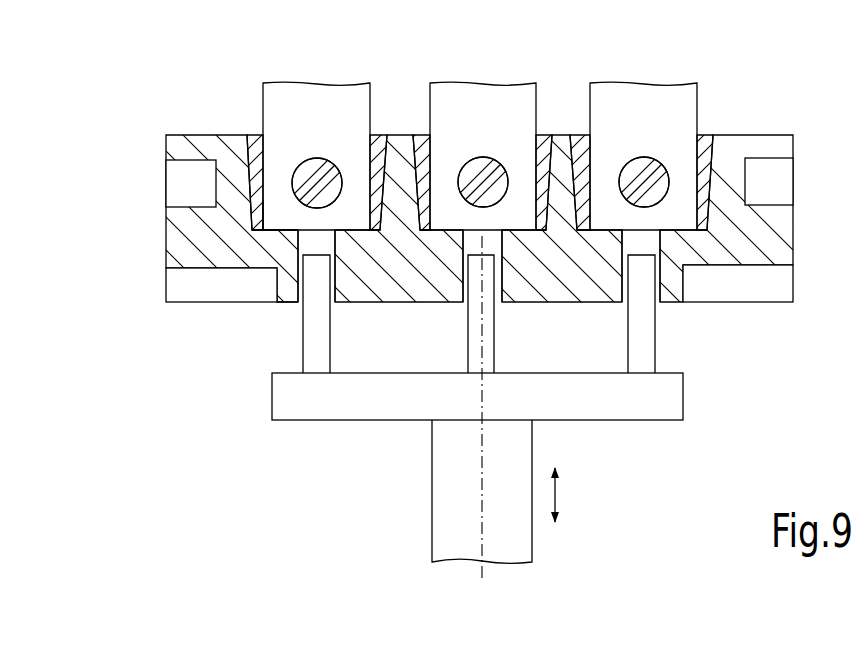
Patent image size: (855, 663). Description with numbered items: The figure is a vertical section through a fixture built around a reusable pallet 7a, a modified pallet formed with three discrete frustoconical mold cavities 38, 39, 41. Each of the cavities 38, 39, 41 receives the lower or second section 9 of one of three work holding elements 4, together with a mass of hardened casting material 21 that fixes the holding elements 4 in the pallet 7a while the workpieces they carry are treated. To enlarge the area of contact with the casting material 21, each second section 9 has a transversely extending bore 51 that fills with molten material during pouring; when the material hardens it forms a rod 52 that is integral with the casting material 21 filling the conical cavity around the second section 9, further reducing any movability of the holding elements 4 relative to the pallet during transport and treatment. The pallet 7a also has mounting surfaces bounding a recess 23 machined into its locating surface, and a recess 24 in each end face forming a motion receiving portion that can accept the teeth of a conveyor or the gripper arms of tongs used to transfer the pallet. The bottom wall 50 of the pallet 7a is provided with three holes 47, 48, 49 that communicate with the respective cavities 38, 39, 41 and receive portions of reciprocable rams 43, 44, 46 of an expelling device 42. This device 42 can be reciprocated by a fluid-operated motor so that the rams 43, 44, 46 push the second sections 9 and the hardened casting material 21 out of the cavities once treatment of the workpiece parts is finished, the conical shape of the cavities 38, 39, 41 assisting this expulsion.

The work holding element 4 is at (331, 112).
The reusable pallet 7a is at (162, 238).
The second section of work holding element 9 is at (280, 223).
The hardened casting material 21 is at (253, 150).
The recess 23 is at (183, 284).
The recess (tooth space) 24 is at (183, 180).
The frustoconical mold cavity 38 is at (375, 237).
The frustoconical mold cavity 39 is at (543, 237).
The frustoconical mold cavity 41 is at (704, 233).
The expelling device 42 is at (414, 494).
The ram 43 is at (317, 348).
The ram 44 is at (488, 347).
The ram 46 is at (647, 347).
The hole 47 is at (317, 242).
The hole 48 is at (480, 240).
The hole 49 is at (642, 240).
The bottom wall 50 is at (287, 299).
The transversely extending bore 51 is at (297, 160).
The rod of hardened casting material 52 is at (330, 178).